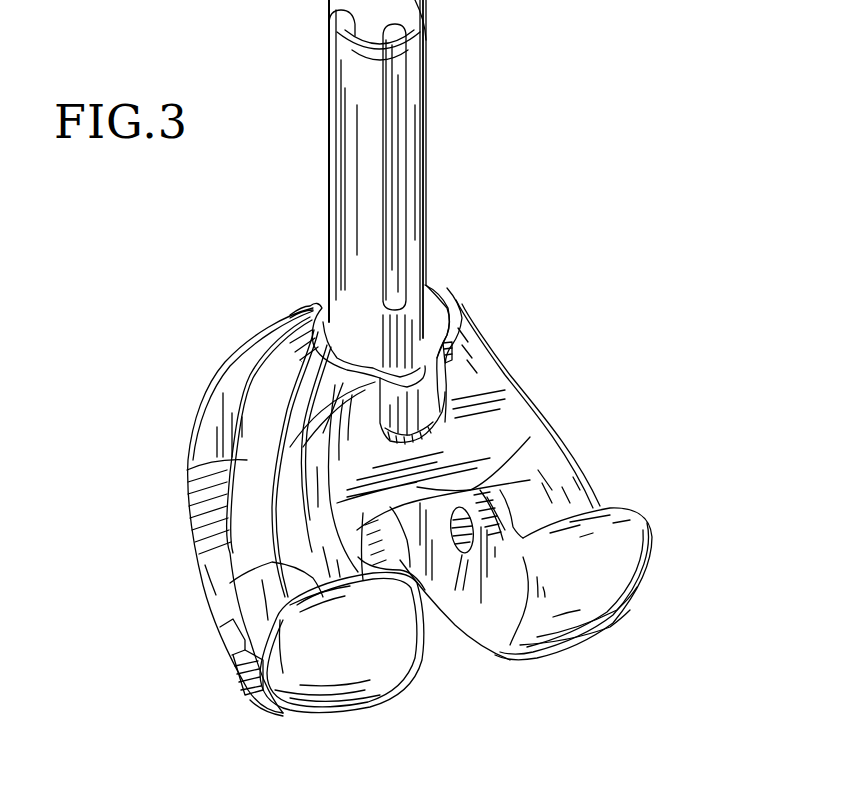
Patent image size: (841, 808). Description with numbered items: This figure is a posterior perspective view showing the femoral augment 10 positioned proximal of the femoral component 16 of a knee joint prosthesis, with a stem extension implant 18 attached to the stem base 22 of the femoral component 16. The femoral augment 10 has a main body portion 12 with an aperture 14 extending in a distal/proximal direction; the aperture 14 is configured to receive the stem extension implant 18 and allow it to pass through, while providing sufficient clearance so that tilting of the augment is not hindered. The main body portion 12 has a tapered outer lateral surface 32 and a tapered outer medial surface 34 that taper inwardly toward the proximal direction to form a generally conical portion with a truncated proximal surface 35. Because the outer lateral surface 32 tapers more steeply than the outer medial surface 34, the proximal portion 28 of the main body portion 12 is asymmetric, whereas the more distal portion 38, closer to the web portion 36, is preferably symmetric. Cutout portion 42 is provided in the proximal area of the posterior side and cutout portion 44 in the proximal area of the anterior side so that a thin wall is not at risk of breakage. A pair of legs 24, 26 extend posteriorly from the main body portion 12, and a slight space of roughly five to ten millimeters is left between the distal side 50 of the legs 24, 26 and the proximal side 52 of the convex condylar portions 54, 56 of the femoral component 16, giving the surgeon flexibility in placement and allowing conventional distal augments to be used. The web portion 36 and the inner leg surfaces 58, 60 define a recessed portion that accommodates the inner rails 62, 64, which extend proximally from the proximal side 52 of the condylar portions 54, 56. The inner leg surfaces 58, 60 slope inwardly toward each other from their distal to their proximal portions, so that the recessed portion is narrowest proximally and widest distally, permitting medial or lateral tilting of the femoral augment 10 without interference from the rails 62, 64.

The femoral augment 10 is at (482, 313).
The main body portion 12 is at (247, 490).
The aperture 14 is at (433, 330).
The femoral component 16 is at (203, 383).
The stem extension implant 18 is at (352, 196).
The stem base 22 is at (410, 430).
The leg 24 is at (557, 484).
The leg 26 is at (230, 583).
The proximal portion 28 is at (327, 433).
The outer lateral surface 32 is at (263, 443).
The outer medial surface 34 is at (500, 378).
The truncated proximal surface 35 is at (447, 288).
The web portion 36 is at (487, 494).
The distal portion 38 is at (450, 494).
The cutout portion 42 is at (420, 380).
The cutout portion 44 is at (327, 305).
The distal side of the legs 50 is at (210, 624).
The proximal side of the condylar portions 52 is at (214, 592).
The convex condylar portion 54 is at (560, 660).
The convex condylar portion 56 is at (250, 705).
The inner leg surface 58 is at (523, 538).
The inner leg surface 60 is at (398, 571).
The inner rail 62 is at (470, 610).
The inner rail 64 is at (408, 558).